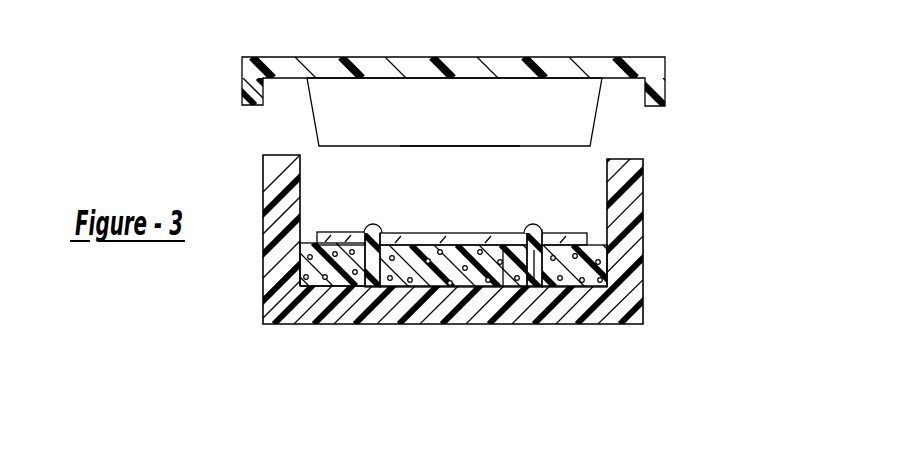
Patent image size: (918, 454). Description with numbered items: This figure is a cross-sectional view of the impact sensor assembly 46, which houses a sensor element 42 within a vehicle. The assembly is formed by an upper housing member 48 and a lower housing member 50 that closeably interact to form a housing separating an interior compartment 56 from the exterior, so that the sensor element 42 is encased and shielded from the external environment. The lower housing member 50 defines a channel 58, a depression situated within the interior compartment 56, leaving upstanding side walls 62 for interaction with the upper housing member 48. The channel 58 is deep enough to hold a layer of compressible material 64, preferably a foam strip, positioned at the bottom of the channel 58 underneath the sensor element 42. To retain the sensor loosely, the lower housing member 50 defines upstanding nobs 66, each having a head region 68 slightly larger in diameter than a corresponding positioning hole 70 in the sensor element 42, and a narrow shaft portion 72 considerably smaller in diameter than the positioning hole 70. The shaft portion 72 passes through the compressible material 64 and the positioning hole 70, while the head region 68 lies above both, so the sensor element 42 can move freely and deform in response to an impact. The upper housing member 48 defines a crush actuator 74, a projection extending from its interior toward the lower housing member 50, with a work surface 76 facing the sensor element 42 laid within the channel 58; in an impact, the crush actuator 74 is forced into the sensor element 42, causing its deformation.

The sensor element 42 is at (447, 232).
The impact sensor assembly 46 is at (461, 239).
The upper housing member 48 is at (665, 74).
The lower housing member 50 is at (643, 313).
The interior compartment 56 is at (313, 160).
The channel 58 is at (573, 210).
The side wall 62 is at (263, 271).
The compressible material 64 is at (402, 250).
The upstanding nob 66 is at (535, 224).
The head region 68 is at (373, 229).
The positioning hole 70 is at (500, 250).
The shaft portion 72 is at (537, 268).
The crush actuator 74 is at (467, 123).
The work surface 76 is at (476, 147).